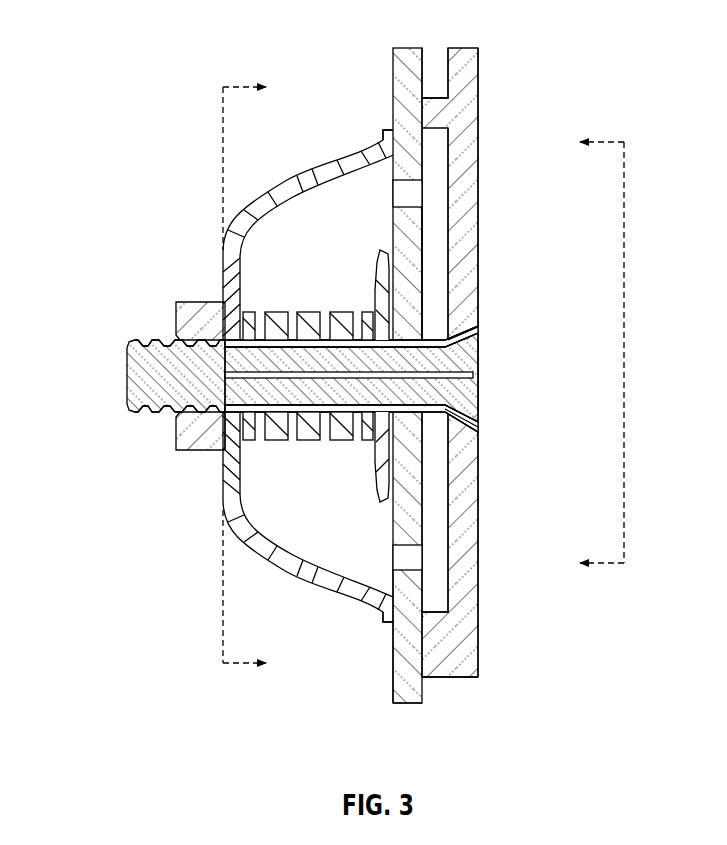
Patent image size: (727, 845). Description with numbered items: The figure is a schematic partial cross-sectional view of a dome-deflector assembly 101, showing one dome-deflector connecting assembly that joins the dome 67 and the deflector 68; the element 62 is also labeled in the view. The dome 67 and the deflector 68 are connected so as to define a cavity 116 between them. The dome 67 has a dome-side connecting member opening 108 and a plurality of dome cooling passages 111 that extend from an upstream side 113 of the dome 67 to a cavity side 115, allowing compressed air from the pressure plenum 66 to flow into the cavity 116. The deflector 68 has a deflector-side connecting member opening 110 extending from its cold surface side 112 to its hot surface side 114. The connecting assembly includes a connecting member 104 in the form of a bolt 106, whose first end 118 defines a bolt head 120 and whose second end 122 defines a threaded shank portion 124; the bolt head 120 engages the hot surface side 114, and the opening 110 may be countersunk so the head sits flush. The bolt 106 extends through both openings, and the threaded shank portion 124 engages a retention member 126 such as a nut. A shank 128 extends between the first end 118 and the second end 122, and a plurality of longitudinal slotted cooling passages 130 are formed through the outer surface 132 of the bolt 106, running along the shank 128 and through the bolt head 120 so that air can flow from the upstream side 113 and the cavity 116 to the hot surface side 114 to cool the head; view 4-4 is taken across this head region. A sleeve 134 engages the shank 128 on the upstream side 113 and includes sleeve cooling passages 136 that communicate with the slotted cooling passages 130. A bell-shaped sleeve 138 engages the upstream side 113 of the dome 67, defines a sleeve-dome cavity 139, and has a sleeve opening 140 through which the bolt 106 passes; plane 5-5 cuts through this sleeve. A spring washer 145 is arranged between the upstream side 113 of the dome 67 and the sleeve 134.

The dome-deflector assembly 101 is at (317, 381).
The cold surface side 112 is at (442, 62).
The hot surface side 114 is at (480, 68).
The cavity 116 is at (437, 216).
The dome-side connecting member opening 108 is at (408, 333).
The longitudinal slotted cooling passages 130 is at (438, 336).
The deflector-side connecting member opening 110 is at (462, 322).
The first end 118 is at (483, 343).
The bolt head 120 is at (483, 402).
The housing 62 is at (504, 359).
The pressure plenum 66 is at (276, 376).
The sleeve-dome cavity 139 is at (263, 231).
The outer surface 132 is at (308, 278).
The sleeve cooling passages 136 is at (261, 306).
The sleeve 134 is at (283, 330).
The shank 128 is at (364, 295).
The threaded shank portion 124 is at (143, 341).
The bolt 106 is at (125, 363).
The second end 122 is at (125, 386).
The retention member 126 is at (207, 450).
The connecting member 104 is at (299, 376).
The sleeve opening 140 is at (240, 445).
The spring washer 145 is at (380, 493).
The bell-shaped sleeve 138 is at (278, 557).
The dome cooling passages 111 is at (388, 193).
The deflector 68 is at (465, 640).
The upstream side 113 is at (393, 663).
The cavity side 115 is at (423, 685).
The dome 67 is at (411, 692).
The view 4- 4 is at (587, 353).
The plane 5- 5 is at (257, 377).